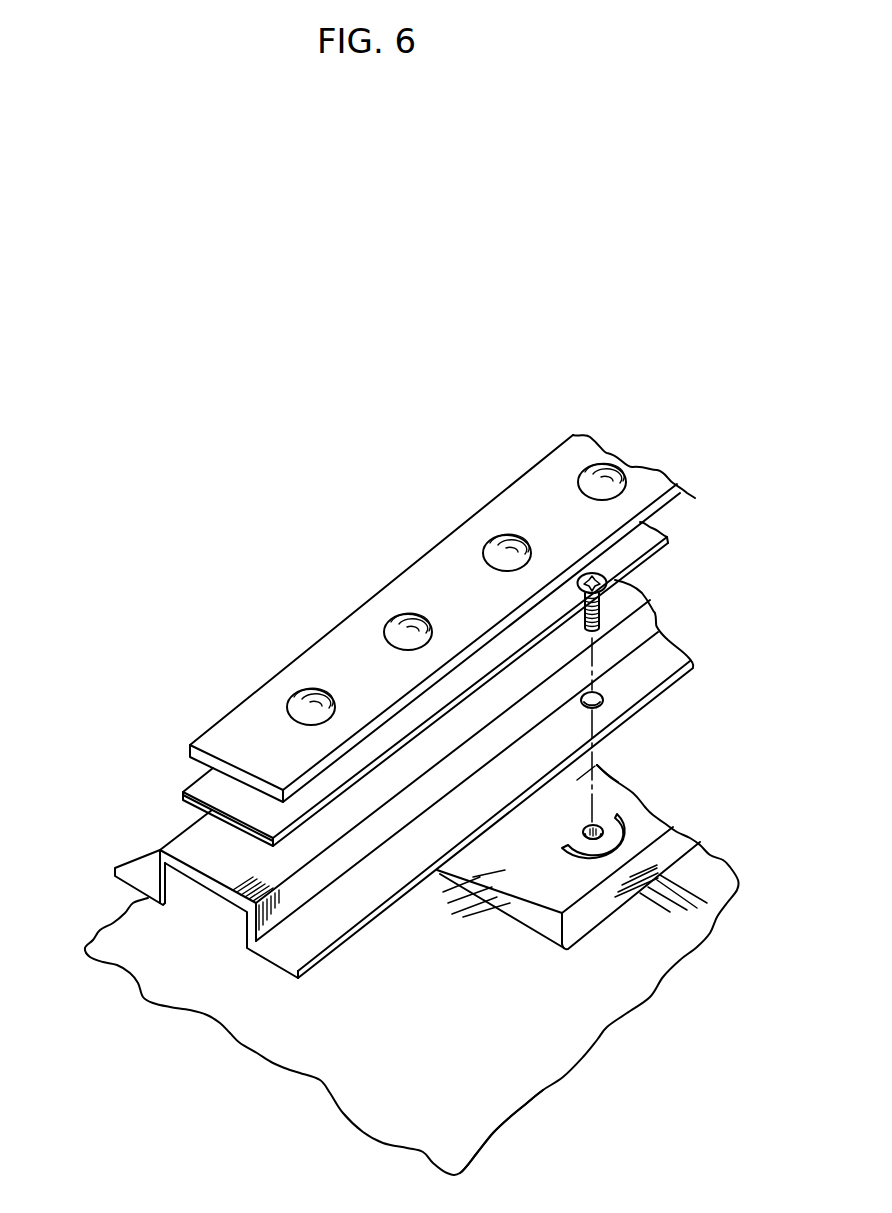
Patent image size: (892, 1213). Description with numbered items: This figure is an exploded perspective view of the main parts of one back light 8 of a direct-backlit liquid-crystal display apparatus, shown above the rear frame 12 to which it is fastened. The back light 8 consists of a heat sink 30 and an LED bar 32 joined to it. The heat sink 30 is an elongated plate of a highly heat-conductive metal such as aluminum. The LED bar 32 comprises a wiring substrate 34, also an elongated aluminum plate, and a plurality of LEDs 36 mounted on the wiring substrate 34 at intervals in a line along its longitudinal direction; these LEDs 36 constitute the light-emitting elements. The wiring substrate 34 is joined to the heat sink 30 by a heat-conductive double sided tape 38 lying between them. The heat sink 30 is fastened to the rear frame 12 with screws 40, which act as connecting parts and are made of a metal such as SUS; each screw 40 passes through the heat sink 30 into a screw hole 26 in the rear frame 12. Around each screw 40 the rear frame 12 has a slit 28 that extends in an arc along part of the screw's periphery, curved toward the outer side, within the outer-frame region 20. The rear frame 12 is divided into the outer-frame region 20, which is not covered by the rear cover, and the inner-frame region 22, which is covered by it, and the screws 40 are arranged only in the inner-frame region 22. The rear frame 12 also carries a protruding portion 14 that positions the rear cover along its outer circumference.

The back light 8 is at (98, 631).
The rear frame 12 is at (590, 1023).
The protruding portion 14 is at (667, 850).
The outer-frame region 20 is at (505, 1090).
The inner-frame region 22 is at (597, 765).
The screw hole 26 is at (583, 832).
The slit 28 is at (628, 814).
The heat sink 30 is at (187, 838).
The LED bar 32 is at (144, 612).
The wiring substrate 34 is at (255, 720).
The LED 36 is at (297, 697).
The double sided tape 38 is at (212, 788).
The screw 40 is at (605, 606).